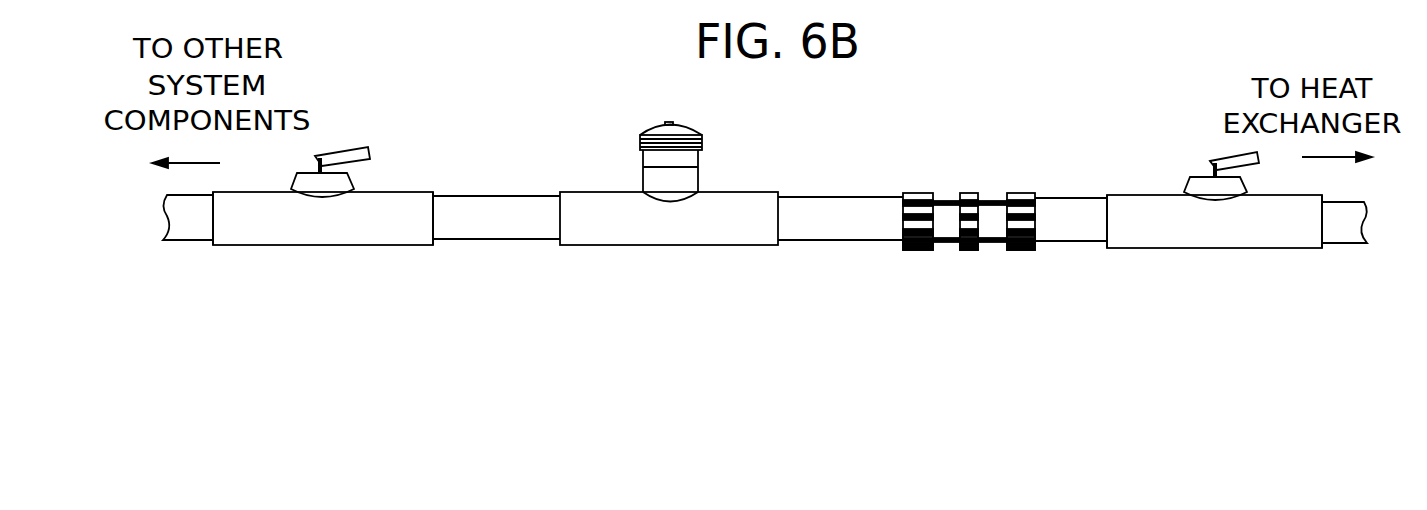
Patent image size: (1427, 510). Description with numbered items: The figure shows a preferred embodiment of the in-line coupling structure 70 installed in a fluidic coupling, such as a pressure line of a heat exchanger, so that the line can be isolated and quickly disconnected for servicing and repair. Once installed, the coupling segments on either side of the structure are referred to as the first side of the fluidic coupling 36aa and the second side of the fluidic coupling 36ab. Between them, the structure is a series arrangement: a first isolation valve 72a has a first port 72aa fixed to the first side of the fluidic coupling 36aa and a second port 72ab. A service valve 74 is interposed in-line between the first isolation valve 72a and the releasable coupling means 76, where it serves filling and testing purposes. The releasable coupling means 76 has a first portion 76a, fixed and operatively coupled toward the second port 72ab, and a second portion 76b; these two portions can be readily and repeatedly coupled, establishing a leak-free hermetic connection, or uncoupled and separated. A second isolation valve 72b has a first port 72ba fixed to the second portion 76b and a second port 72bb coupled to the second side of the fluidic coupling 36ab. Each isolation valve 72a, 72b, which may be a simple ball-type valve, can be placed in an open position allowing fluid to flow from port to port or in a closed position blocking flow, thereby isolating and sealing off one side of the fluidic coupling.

The in-line coupling structure 70 is at (878, 336).
The first side of fluidic coupling 36aa is at (178, 230).
The second side of fluidic coupling 36ab is at (1362, 244).
The first isolation valve 72a is at (322, 262).
The first port of first isolation valve 72aa is at (222, 240).
The second port of first isolation valve 72ab is at (413, 198).
The second isolation valve 72b is at (1215, 262).
The first port of second isolation valve 72ba is at (1118, 242).
The second port of second isolation valve 72bb is at (1317, 245).
The service valve 74 is at (675, 230).
The releasable coupling means 76 is at (967, 184).
The first portion of releasable coupling means 76a is at (918, 193).
The second portion of releasable coupling means 76b is at (1020, 193).